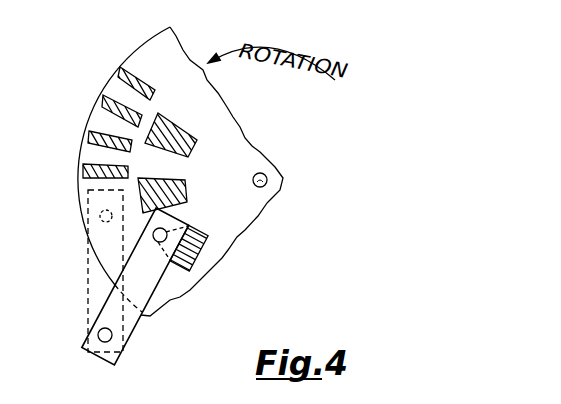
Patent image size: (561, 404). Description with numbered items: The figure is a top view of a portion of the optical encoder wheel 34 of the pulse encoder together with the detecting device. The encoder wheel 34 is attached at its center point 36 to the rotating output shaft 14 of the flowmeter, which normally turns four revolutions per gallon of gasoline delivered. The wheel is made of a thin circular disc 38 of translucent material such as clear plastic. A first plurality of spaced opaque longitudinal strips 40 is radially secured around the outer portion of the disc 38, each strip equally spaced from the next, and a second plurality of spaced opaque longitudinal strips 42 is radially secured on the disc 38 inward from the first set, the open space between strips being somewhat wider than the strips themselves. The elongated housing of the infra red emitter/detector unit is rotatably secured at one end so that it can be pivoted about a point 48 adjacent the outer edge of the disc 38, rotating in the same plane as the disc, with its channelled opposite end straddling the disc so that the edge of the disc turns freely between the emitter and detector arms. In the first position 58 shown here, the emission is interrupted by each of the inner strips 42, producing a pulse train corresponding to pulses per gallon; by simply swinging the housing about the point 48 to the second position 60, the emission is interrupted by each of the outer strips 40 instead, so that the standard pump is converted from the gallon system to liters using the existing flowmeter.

The optical encoder wheel 34 is at (152, 40).
The first plurality of spaced opaque longitudinal strips 40 is at (142, 69).
The second plurality of spaced opaque longitudinal strips 42 is at (180, 116).
The thin circular disc 38 is at (242, 143).
The rotating output shaft 14 is at (266, 177).
The center point 36 is at (267, 203).
The first position 58 is at (145, 288).
The pivot point 48 is at (112, 338).
The second position 60 is at (88, 300).